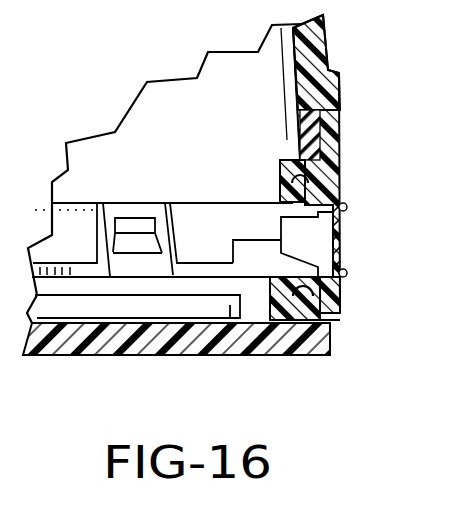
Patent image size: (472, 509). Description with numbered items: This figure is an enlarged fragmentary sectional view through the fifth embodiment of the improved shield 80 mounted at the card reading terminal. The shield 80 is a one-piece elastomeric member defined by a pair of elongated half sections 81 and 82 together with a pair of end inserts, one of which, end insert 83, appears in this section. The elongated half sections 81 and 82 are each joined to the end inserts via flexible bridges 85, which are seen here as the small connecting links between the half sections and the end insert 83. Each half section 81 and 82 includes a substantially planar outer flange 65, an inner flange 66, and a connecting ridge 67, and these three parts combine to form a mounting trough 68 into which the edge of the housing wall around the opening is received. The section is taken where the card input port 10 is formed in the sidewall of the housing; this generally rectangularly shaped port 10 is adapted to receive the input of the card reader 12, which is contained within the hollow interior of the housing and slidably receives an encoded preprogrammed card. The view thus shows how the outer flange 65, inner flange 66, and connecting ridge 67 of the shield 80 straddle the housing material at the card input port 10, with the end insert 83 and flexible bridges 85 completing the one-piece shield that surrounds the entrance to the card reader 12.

The card input port 10 is at (307, 186).
The card reader 12 is at (137, 267).
The outer flange 65 is at (333, 288).
The inner flange 66 is at (297, 170).
The connecting ridge 67 is at (326, 327).
The mounting trough 68 is at (300, 205).
The shield 80 is at (361, 179).
The elongated half section 81 is at (343, 166).
The elongated half section 82 is at (342, 315).
The end insert 83 is at (340, 233).
The flexible bridges 85 is at (347, 206).